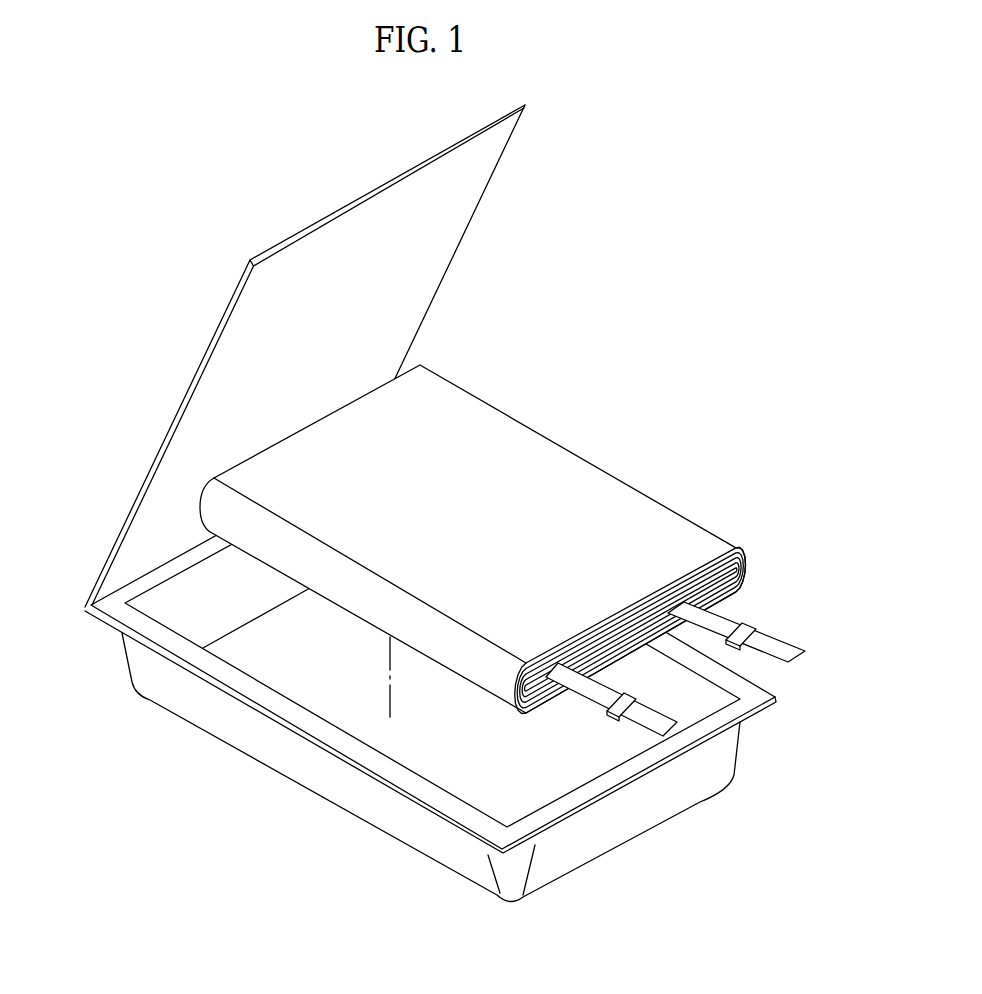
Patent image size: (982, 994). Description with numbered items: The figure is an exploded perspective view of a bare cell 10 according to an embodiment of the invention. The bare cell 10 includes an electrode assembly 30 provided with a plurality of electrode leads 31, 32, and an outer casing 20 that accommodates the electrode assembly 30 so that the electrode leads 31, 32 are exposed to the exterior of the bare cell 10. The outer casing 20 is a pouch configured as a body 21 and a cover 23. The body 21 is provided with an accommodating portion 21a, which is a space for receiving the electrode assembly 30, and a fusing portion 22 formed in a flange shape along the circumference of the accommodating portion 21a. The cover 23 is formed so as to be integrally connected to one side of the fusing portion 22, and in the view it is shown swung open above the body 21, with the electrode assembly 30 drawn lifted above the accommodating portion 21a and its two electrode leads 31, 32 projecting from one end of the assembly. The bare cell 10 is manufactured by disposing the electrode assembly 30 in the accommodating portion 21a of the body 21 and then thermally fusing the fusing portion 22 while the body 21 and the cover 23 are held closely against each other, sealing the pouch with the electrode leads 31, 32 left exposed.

The bare cell 10 is at (447, 517).
The outer casing 20 is at (403, 517).
The body 21 is at (385, 688).
The accommodating portion 21a is at (334, 696).
The fusing portion 22 is at (566, 808).
The cover 23 is at (140, 490).
The electrode assembly 30 is at (532, 594).
The electrode lead 31 is at (687, 727).
The electrode lead 32 is at (802, 657).